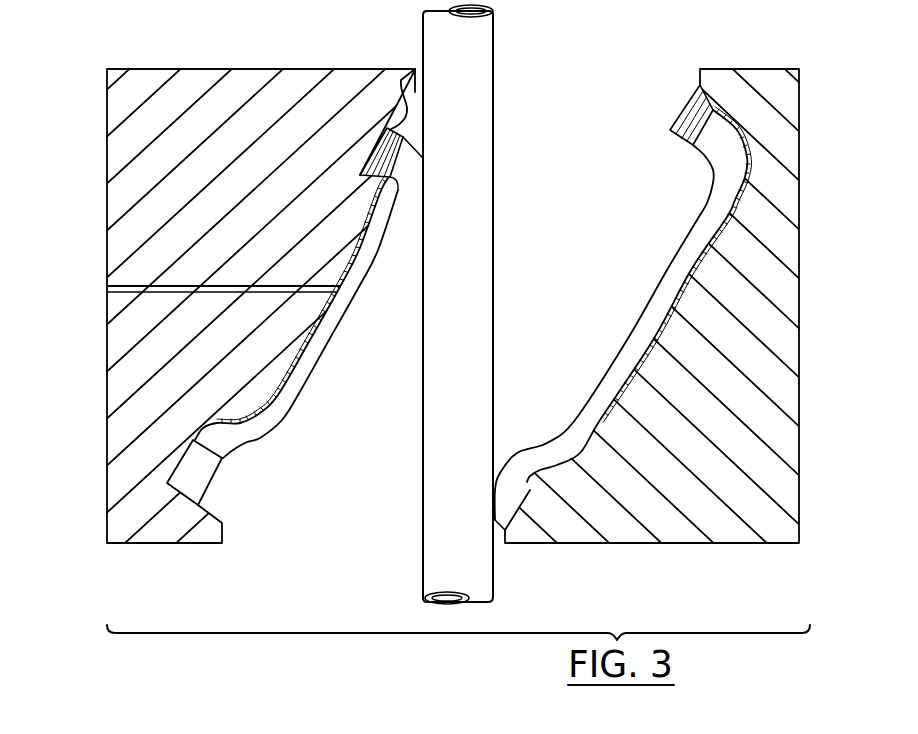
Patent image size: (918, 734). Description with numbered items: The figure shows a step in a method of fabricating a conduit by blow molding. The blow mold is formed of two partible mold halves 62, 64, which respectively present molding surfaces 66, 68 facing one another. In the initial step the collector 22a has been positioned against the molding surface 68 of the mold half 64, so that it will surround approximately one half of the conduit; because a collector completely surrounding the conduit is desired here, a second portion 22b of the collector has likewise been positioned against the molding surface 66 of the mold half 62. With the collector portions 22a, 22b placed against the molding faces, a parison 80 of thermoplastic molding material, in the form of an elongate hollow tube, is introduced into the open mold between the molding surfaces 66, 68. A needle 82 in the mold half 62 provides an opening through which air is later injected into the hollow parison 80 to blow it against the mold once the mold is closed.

The mold half 62 is at (198, 69).
The mold half 64 is at (753, 69).
The molding surface 66 is at (401, 80).
The molding surface 68 is at (684, 102).
The parison 80 is at (496, 127).
The needle 82 is at (130, 284).
The collector 22a is at (625, 338).
The second portion of the collector 22b is at (348, 323).